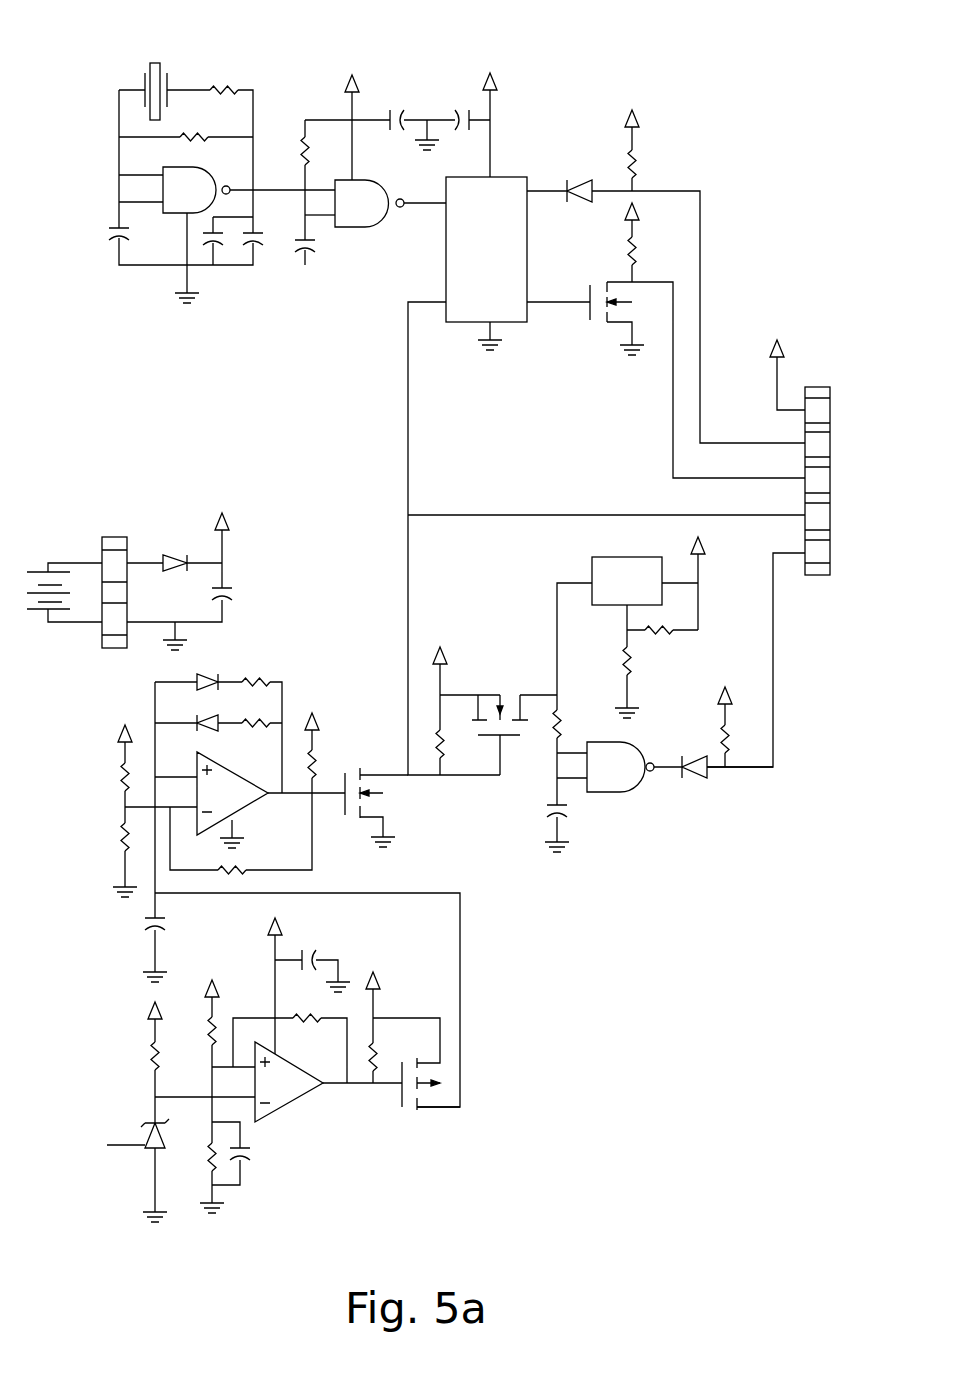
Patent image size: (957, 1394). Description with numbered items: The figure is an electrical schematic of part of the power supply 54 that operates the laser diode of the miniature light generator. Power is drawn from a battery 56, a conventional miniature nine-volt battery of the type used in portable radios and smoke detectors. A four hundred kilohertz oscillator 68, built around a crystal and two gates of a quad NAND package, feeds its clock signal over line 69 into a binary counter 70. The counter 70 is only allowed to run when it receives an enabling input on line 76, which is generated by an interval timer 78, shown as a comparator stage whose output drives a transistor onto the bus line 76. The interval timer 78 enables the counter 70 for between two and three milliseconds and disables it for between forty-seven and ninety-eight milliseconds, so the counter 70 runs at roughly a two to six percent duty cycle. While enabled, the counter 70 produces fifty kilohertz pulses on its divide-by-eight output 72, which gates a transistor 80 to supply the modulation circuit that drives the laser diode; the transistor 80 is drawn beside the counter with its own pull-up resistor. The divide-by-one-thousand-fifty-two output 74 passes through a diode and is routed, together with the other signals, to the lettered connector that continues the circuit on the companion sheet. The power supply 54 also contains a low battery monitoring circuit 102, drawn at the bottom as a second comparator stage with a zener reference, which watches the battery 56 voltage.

The power supply 54 is at (457, 617).
The battery 56 is at (63, 561).
The oscillator 68 is at (201, 87).
The clock line 69 is at (426, 207).
The binary counter 70 is at (503, 172).
The divide-by-eight output 72 is at (551, 294).
The divide-by-one thousand fifty two output 74 is at (551, 183).
The line 76 is at (406, 367).
The interval timer 78 is at (253, 807).
The transistor 80 is at (589, 319).
The low battery monitoring circuit 102 is at (301, 1109).